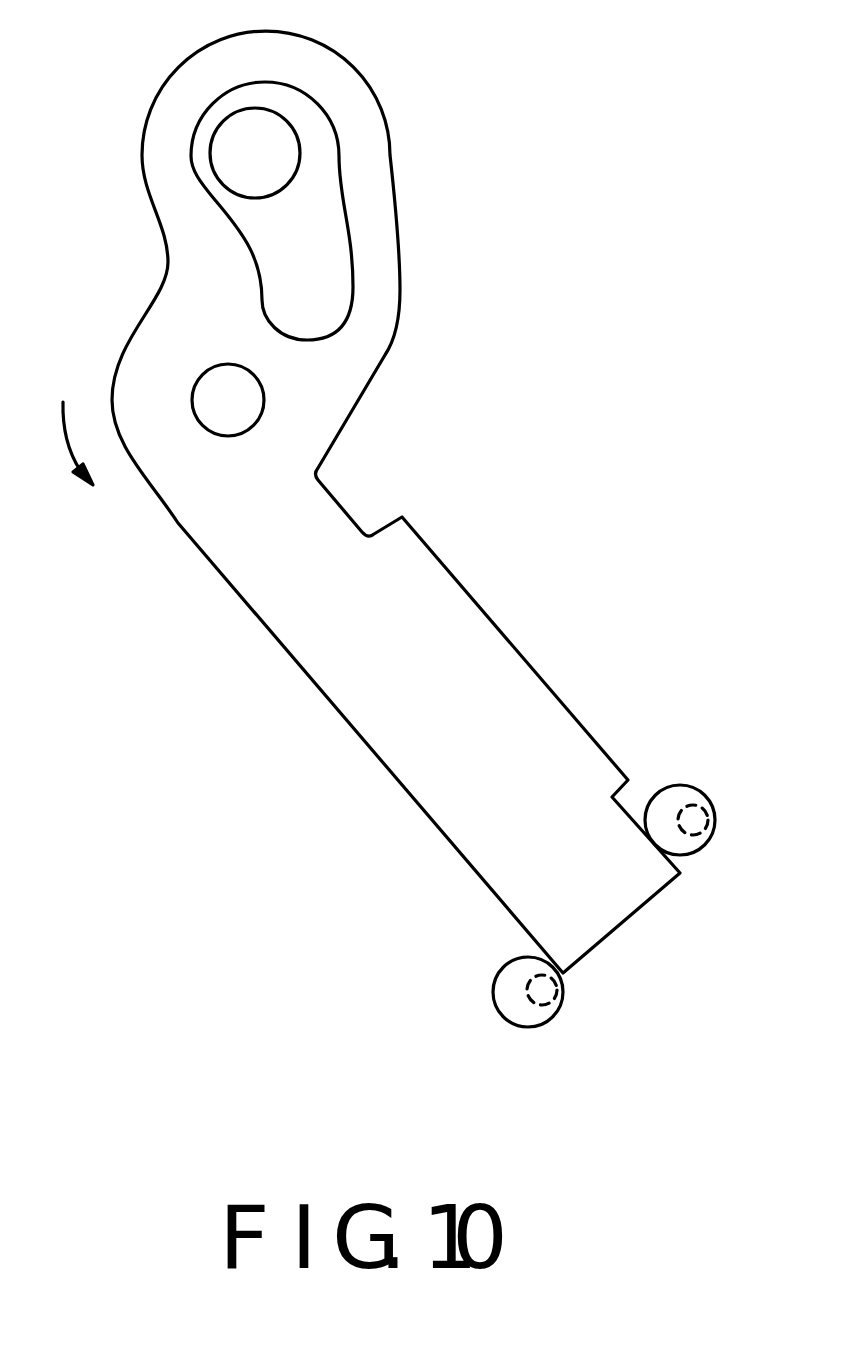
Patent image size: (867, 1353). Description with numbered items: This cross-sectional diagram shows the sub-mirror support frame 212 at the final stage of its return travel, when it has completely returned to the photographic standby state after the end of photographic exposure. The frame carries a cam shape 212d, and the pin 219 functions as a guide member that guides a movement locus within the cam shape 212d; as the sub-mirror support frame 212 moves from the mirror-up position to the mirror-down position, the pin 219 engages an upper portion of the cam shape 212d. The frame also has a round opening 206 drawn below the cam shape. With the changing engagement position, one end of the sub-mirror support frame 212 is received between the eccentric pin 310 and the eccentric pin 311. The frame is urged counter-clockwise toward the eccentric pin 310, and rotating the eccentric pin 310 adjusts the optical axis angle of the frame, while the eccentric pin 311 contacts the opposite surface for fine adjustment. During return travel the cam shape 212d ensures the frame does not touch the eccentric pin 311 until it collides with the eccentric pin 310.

The sub-mirror support frame 212 is at (485, 655).
The cam shape 212d is at (336, 327).
The pin 219 is at (278, 153).
The pin 206 is at (243, 415).
The eccentric pin 310 is at (677, 790).
The eccentric pin 311 is at (527, 1017).